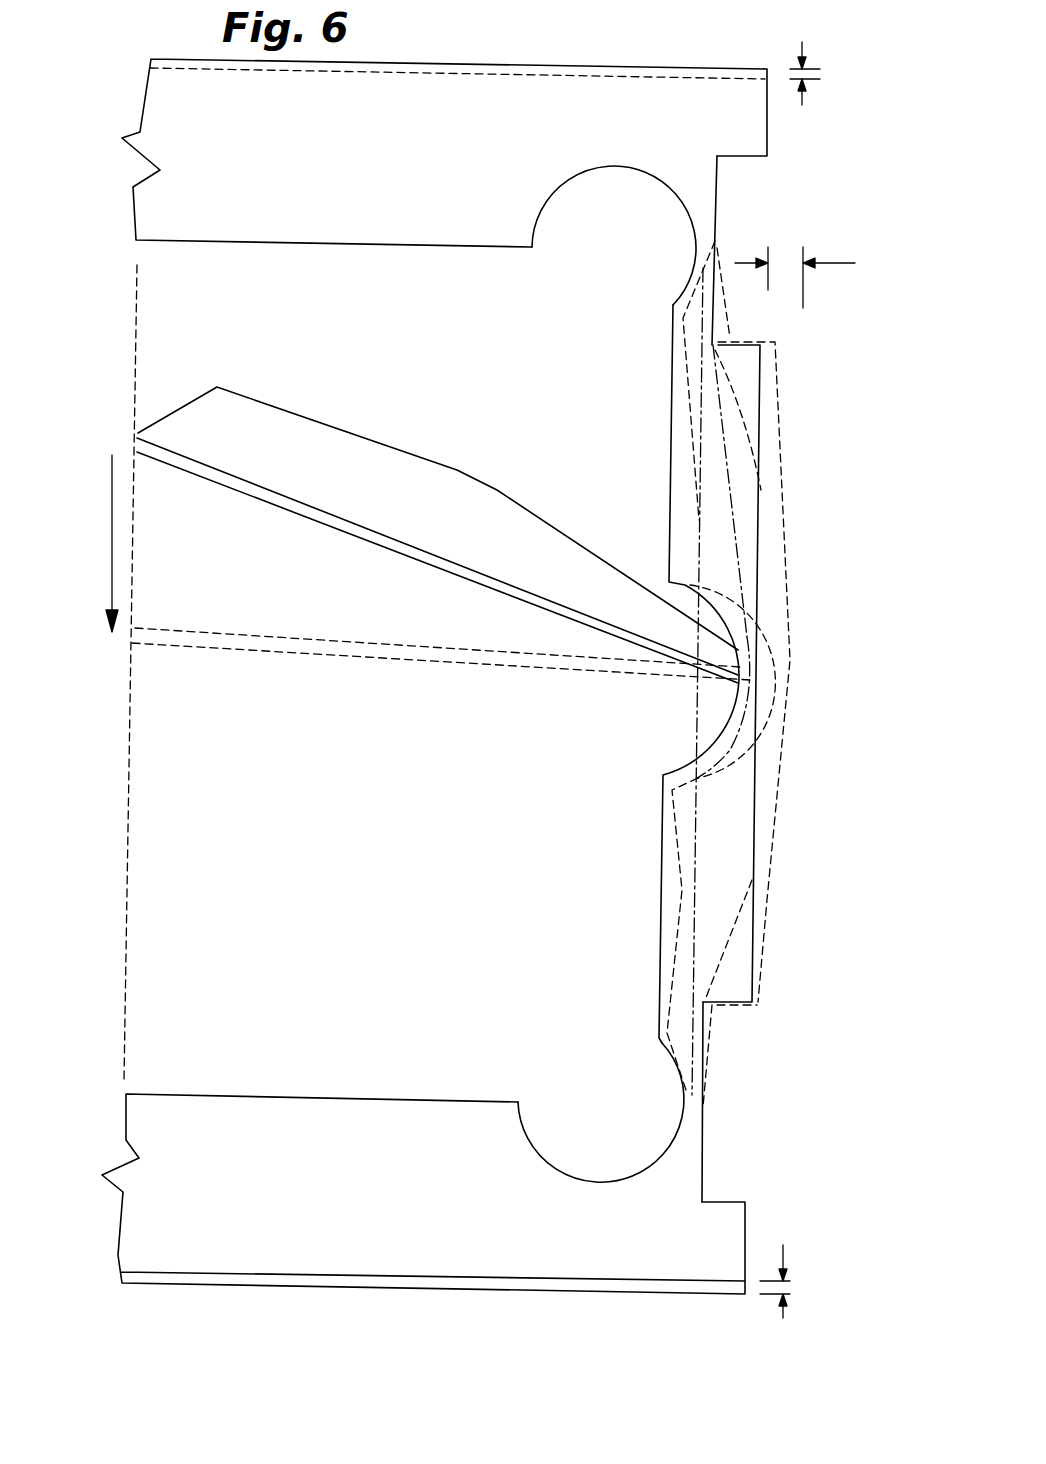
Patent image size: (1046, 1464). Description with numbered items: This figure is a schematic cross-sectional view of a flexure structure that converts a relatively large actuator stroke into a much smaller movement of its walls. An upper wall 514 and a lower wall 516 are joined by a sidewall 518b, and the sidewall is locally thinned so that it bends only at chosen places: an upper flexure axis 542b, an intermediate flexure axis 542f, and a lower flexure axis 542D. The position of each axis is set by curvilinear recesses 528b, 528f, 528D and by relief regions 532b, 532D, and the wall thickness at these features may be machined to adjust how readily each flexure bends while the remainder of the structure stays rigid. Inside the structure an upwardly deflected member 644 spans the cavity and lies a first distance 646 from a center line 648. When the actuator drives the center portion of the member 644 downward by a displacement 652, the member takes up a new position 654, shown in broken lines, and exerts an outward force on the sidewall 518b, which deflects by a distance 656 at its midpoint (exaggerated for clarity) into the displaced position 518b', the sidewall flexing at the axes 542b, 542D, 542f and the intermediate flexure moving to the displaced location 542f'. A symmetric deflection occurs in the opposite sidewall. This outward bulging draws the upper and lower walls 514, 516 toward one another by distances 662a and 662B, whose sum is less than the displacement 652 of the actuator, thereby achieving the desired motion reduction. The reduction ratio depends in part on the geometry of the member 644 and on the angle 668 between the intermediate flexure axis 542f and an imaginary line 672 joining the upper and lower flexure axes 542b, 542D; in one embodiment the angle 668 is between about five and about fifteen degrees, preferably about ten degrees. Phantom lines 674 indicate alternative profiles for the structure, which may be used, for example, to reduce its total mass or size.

The upper wall 514 is at (538, 145).
The lower wall 516 is at (423, 1194).
The curvilinear recess 528b is at (686, 210).
The curvilinear recess 528f is at (737, 698).
The curvilinear recess 528D is at (662, 1155).
The relief region 532b is at (717, 185).
The relief region 532D is at (703, 1173).
The upper flexure axis 542b is at (713, 232).
The lower flexure axis 542D is at (695, 1120).
The intermediate flexure axis 542f is at (792, 707).
The displaced blade ridge 542f' is at (794, 681).
The sidewall 518b is at (801, 673).
The displaced blade 518b' is at (807, 673).
The angle 668 is at (722, 518).
The imaginary line 672 is at (697, 731).
The phantom lines 674 is at (735, 387).
The deflectable member 644 is at (308, 448).
The first distance 646 is at (490, 478).
The center line 648 is at (197, 672).
The actuator displacement 652 is at (75, 543).
The new position of member 654 is at (360, 657).
The outward deflection distance 656 is at (828, 265).
The upper wall movement distance 662a is at (803, 106).
The lower wall movement distance 662B is at (785, 1262).